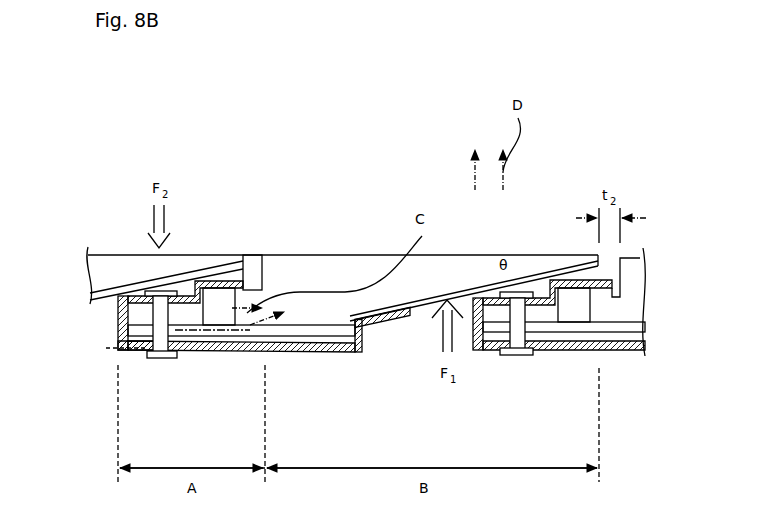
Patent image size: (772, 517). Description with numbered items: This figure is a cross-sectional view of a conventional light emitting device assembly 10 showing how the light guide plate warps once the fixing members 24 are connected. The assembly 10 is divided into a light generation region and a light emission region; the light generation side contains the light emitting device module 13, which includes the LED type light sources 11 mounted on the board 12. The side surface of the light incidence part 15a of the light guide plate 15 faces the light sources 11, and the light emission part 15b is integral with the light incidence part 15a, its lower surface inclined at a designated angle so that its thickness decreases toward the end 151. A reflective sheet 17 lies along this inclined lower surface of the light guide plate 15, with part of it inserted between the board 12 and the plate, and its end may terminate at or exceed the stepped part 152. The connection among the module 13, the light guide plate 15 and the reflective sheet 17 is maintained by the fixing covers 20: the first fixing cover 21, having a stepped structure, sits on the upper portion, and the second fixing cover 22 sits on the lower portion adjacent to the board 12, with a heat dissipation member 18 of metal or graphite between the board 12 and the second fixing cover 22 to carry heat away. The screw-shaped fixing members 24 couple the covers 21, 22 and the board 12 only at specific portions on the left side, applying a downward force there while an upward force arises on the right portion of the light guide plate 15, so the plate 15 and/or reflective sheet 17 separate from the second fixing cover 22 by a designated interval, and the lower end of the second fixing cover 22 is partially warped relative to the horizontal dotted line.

The light emitting device assembly 10 is at (549, 204).
The light sources 11 is at (214, 313).
The board 12 is at (248, 334).
The light emitting device module 13 is at (269, 361).
The light guide plate 15 is at (343, 163).
The end 151 is at (245, 262).
The light incidence part 15a is at (262, 258).
The stepped part 152 is at (268, 283).
The light emission part 15b is at (330, 262).
The reflective sheet 17 is at (417, 306).
The heat dissipation member 18 is at (305, 343).
The fixing covers 20 is at (88, 338).
The first fixing cover 21 is at (118, 313).
The second fixing cover 22 is at (118, 340).
The fixing members 24 is at (162, 358).